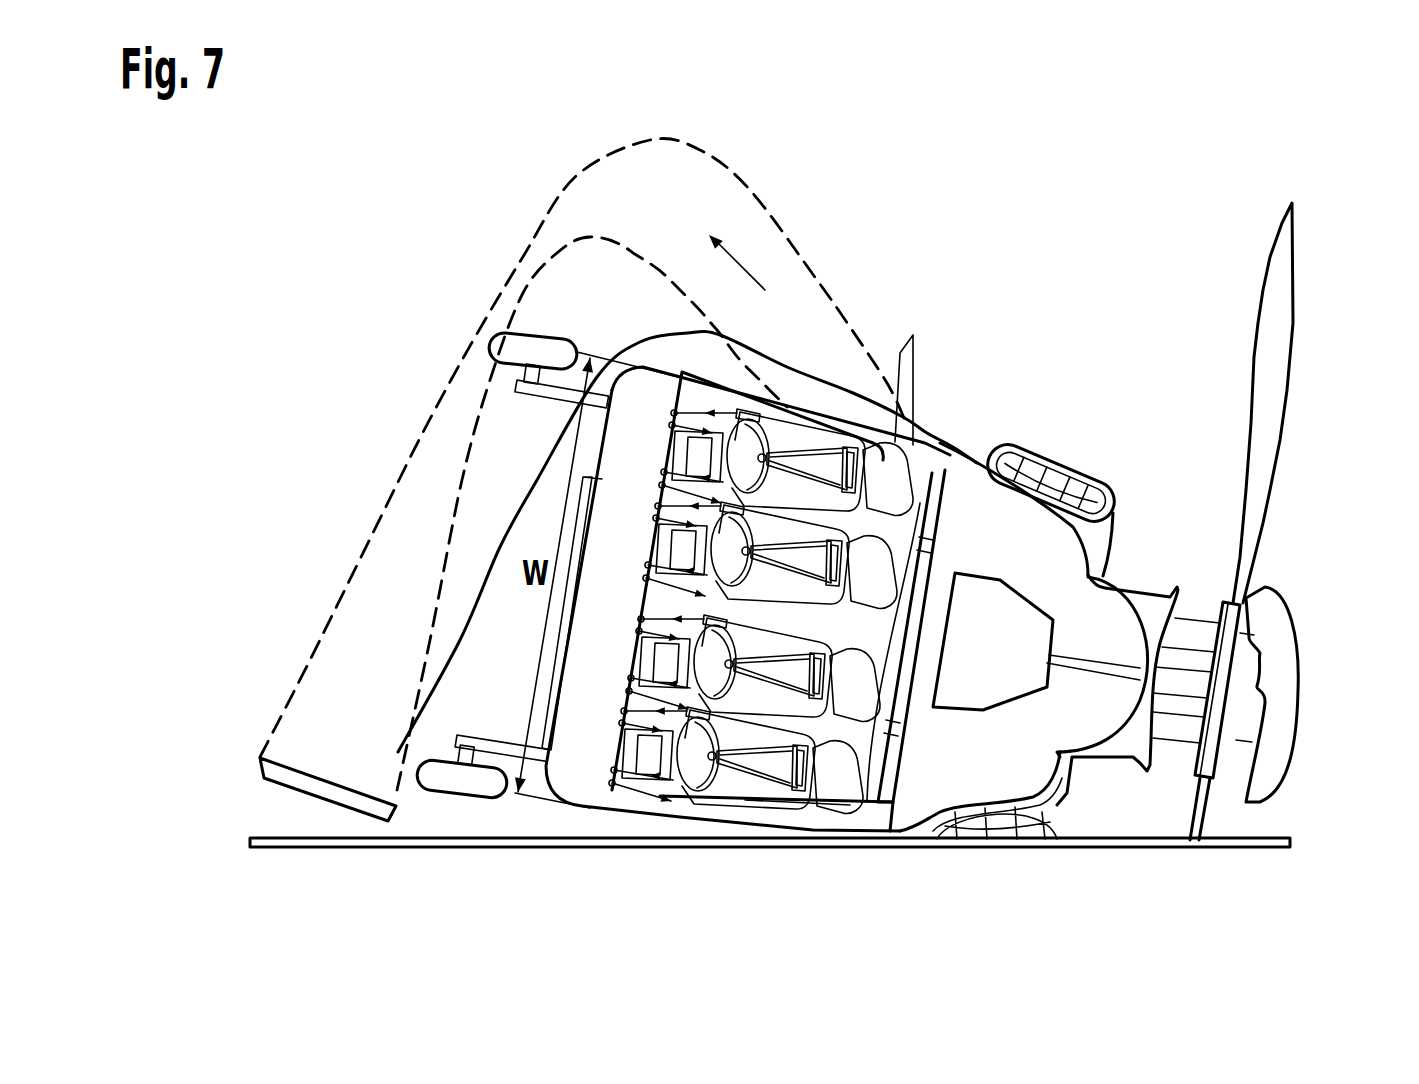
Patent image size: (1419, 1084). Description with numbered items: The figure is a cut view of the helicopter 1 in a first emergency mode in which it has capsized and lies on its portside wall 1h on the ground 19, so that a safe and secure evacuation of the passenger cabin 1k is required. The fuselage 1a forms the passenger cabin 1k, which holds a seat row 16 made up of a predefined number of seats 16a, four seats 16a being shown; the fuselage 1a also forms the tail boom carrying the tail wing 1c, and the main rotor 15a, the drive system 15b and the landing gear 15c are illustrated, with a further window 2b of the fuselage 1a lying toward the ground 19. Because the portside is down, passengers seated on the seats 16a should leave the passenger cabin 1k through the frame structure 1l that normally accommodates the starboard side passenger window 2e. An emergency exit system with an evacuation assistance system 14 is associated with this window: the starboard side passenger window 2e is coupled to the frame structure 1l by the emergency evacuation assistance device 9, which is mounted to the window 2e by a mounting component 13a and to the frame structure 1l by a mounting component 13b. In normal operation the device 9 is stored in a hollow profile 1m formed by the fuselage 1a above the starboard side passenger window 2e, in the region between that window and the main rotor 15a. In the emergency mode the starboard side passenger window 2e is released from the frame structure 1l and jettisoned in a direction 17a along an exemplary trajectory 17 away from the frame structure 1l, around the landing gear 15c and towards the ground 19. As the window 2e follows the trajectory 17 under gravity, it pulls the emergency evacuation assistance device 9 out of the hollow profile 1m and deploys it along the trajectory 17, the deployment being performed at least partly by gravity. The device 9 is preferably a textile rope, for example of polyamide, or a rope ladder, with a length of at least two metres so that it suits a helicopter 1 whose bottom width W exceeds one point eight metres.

The helicopter 1 is at (1080, 150).
The exemplary trajectory 17 is at (578, 178).
The direction 17a is at (743, 270).
The evacuation assistance system 14 is at (643, 333).
The emergency evacuation assistance device 9 is at (763, 347).
The frame structure 1l is at (888, 456).
The tail wing 1c is at (920, 375).
The mounting component 13b is at (940, 427).
The hollow profile 1m is at (950, 450).
The passenger cabin 1k is at (900, 530).
The drive system 15b is at (1100, 595).
The main rotor 15a is at (1300, 560).
The starboard side passenger window 2e is at (313, 806).
The mounting component 13a is at (402, 818).
The landing gear 15c is at (475, 808).
The fuselage 1a is at (590, 790).
The portside wall 1h is at (688, 832).
The seat row 16 is at (758, 822).
The seats 16a is at (783, 793).
The rear wheel 2b is at (820, 822).
The ground 19 is at (1130, 849).